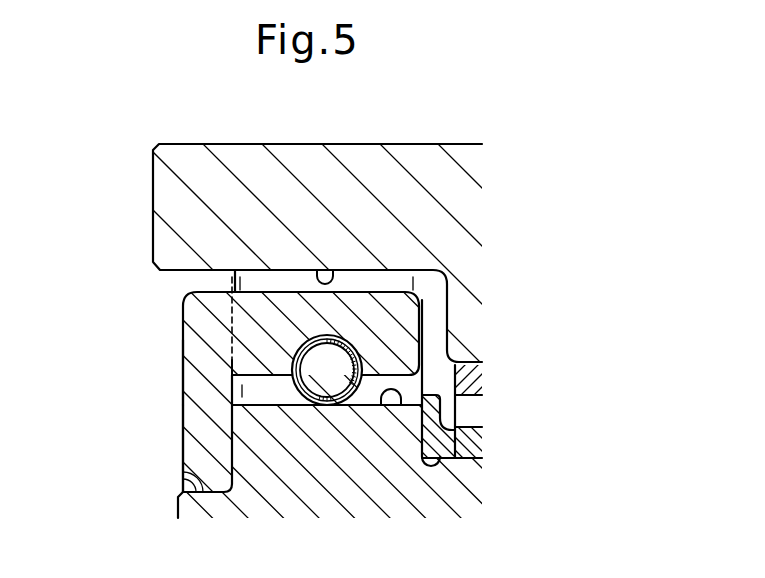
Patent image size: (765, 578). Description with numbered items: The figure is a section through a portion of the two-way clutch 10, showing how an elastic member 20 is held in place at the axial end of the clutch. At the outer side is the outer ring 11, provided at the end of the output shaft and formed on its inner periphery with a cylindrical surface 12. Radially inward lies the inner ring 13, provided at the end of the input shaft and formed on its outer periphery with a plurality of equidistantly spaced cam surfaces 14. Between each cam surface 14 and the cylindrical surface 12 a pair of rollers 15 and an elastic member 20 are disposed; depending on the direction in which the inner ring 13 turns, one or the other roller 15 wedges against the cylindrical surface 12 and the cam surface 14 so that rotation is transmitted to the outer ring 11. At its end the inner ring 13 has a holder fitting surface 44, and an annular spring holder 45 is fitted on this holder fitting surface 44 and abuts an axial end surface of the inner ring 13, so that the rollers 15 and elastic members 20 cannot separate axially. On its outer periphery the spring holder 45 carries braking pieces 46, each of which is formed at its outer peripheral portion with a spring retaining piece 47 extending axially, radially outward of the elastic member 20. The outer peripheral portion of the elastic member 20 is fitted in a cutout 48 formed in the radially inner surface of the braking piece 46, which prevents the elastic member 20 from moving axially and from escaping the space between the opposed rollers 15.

The two-way clutch 10 is at (171, 136).
The outer ring 11 is at (240, 158).
The cylindrical surface 12 is at (333, 271).
The inner ring 13 is at (340, 478).
The cam surface 14 is at (400, 400).
The roller 15 is at (368, 282).
The elastic member 20 is at (317, 380).
The holder fitting surface 44 is at (183, 471).
The spring holder 45 is at (203, 425).
The braking piece 46 is at (200, 386).
The spring retaining piece 47 is at (247, 330).
The cutout 48 is at (312, 360).